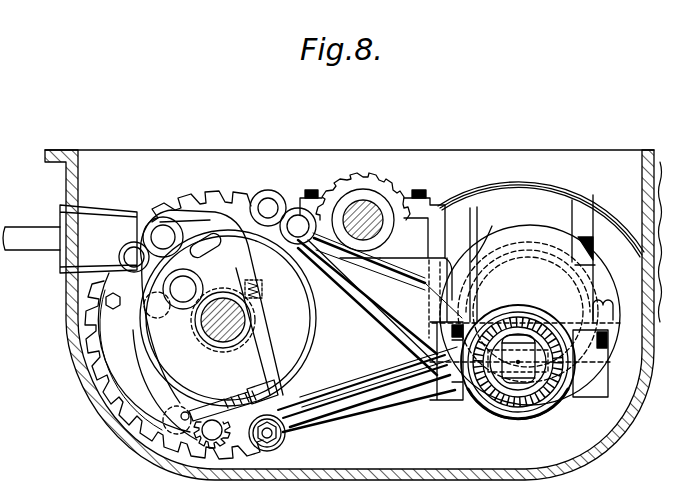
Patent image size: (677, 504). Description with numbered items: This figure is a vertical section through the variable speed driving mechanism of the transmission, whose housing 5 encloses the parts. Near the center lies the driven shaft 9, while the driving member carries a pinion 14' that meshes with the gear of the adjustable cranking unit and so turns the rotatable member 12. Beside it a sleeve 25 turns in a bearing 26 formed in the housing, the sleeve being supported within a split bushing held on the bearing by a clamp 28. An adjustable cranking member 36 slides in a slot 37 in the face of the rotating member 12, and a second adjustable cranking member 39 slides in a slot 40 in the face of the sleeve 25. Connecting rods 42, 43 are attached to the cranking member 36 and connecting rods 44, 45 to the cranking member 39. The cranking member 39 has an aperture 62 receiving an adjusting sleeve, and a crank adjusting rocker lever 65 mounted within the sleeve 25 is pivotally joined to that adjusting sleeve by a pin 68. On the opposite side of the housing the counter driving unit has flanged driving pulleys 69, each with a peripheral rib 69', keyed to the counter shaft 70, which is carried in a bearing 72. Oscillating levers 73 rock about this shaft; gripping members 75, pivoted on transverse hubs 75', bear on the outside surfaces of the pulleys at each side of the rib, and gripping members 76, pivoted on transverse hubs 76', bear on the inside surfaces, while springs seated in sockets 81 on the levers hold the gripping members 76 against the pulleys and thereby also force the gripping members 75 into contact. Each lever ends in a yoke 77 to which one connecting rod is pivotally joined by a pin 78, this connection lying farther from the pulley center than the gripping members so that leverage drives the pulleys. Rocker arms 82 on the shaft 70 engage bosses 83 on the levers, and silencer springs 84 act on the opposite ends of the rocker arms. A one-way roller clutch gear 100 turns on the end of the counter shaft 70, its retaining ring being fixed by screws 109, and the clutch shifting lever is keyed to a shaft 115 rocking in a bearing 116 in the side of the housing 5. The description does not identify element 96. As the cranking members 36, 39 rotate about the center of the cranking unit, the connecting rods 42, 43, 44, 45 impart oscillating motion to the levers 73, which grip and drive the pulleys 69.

The housing 5 is at (76, 324).
The driven shaft 9 is at (361, 210).
The rotatable member 12 is at (590, 205).
The pinion 14' is at (363, 175).
The sleeve 25 is at (526, 228).
The bearing 26 is at (590, 412).
The clamp 28 is at (436, 192).
The adjustable cranking member 36 is at (507, 195).
The slot 37 is at (474, 208).
The second adjustable cranking member 39 is at (488, 392).
The slot 40 is at (481, 262).
The connecting rod 42 is at (400, 257).
The connecting rod 43 is at (406, 352).
The connecting rod 44 is at (314, 300).
The connecting rod 45 is at (396, 413).
The aperture 62 is at (507, 405).
The crank adjusting rocker lever 65 is at (210, 393).
The pin 68 is at (544, 400).
The flanged driving pulley 69 is at (174, 325).
The peripheral rib 69' is at (100, 360).
The counter shaft 70 is at (212, 330).
The bearing 72 is at (214, 262).
The oscillating lever 73 is at (263, 198).
The gripping member 75 is at (130, 356).
The transverse hub 75' is at (190, 339).
The gripping member 76 is at (138, 308).
The transverse hub 76' is at (183, 300).
The yoke 77 is at (277, 197).
The pin 78 is at (271, 445).
The socket 81 is at (260, 300).
The rocker arm 82 is at (303, 350).
The boss 83 is at (200, 212).
The silencer spring 84 is at (232, 392).
The pin 96 is at (183, 421).
The one-way roller clutch gear 100 is at (186, 205).
The screw 109 is at (105, 301).
The shaft 115 is at (42, 248).
The bearing 116 is at (120, 206).